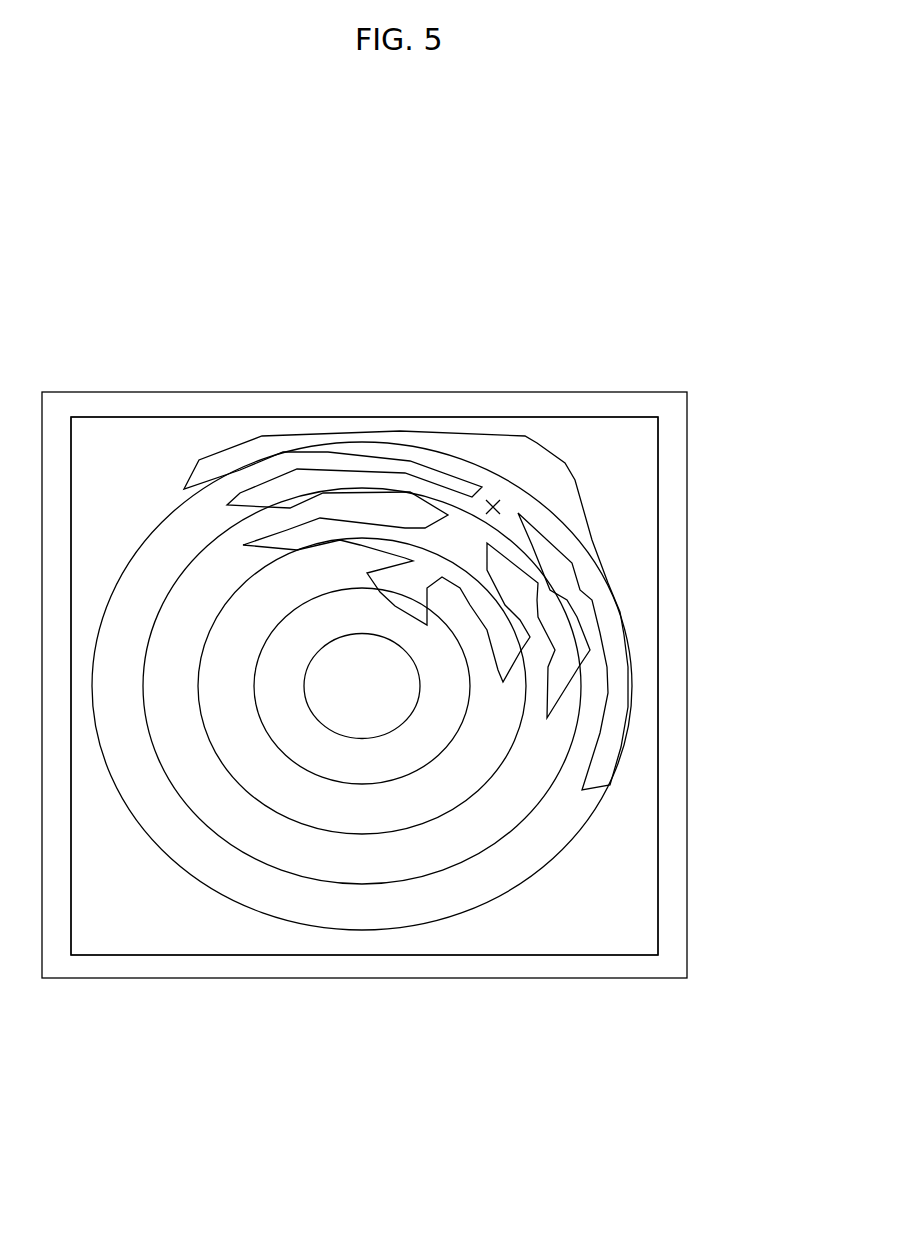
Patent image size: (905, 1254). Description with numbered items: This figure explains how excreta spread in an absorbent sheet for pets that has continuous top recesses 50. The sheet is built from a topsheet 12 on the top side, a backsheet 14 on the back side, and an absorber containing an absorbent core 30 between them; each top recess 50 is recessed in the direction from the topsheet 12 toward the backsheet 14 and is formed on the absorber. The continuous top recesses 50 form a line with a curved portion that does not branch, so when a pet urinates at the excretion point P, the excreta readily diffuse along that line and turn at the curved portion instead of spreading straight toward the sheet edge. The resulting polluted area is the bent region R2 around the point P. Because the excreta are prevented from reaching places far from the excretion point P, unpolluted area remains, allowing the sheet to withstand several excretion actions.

The topsheet 12 is at (647, 748).
The backsheet 14 is at (677, 595).
The absorbent core 30 is at (660, 865).
The top recess 50 is at (320, 727).
The region R2 is at (533, 443).
The excretion point P is at (499, 507).